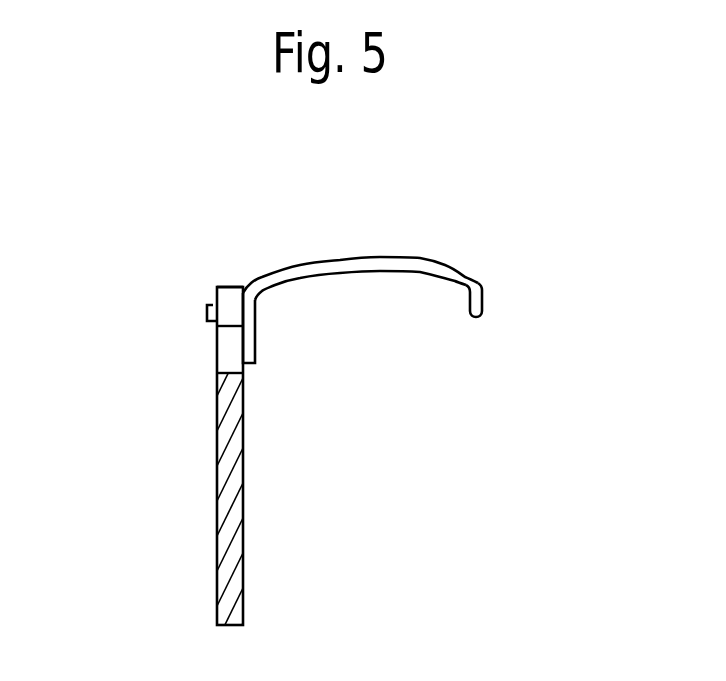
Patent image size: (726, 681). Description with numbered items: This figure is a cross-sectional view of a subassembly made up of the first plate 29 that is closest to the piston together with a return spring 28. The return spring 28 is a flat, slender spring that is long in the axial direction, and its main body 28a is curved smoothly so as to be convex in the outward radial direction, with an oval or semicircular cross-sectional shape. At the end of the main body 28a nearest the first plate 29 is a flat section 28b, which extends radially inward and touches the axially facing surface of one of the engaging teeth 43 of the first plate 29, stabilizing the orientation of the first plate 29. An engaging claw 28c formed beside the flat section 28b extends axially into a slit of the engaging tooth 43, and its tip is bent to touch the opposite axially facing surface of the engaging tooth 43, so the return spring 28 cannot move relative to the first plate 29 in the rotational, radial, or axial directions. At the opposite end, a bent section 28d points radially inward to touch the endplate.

The return spring 28 is at (456, 250).
The main body 28a is at (331, 267).
The flat section 28b is at (250, 345).
The engaging claw 28c is at (206, 319).
The bent section 28d is at (482, 287).
The first plate 29 is at (268, 514).
The engaging tooth 43 is at (224, 300).